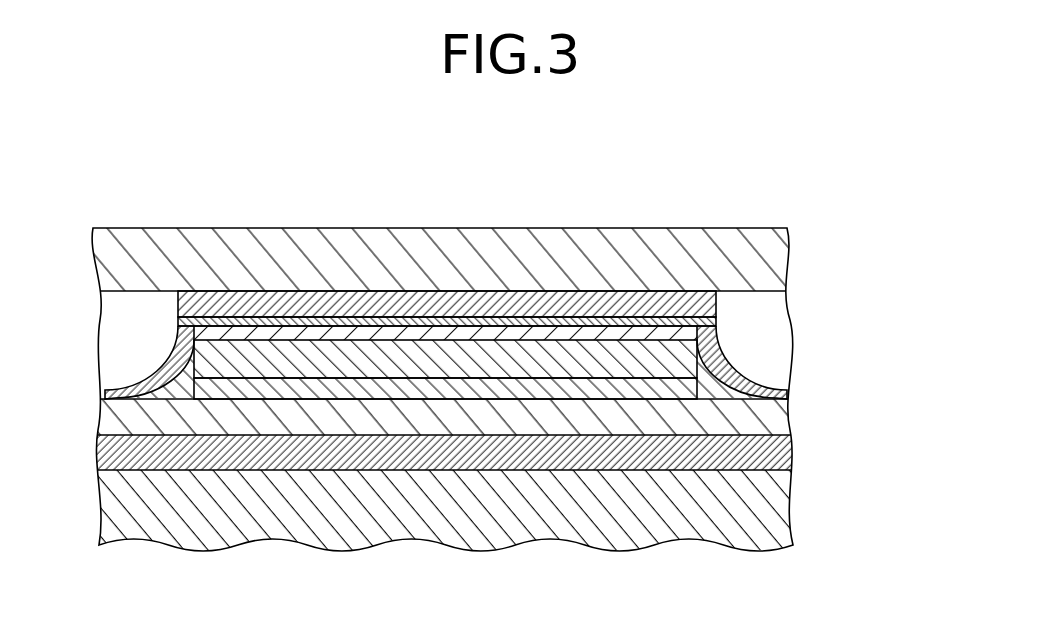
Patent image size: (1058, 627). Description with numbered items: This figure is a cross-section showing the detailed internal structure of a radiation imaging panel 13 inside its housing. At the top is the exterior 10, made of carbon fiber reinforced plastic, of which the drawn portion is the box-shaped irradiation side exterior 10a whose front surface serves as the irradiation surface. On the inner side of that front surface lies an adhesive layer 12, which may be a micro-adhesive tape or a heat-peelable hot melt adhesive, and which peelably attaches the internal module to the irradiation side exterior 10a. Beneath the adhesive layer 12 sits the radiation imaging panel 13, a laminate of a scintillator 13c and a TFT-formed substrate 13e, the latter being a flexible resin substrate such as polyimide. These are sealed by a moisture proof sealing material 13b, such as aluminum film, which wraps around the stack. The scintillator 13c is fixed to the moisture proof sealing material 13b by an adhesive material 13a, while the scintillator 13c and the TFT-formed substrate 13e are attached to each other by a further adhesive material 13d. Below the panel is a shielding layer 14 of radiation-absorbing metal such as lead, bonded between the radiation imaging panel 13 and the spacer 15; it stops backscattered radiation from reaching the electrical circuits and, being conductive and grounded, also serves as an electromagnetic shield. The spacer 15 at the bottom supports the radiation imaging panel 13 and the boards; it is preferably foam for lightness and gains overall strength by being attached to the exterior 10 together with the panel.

The exterior 10 is at (637, 227).
The irradiation side exterior 10a is at (637, 227).
The adhesive layer 12 is at (702, 300).
The radiation imaging panel 13 is at (518, 344).
The adhesive material 13a is at (697, 337).
The moisture proof sealing material 13b is at (727, 348).
The scintillator 13c is at (687, 373).
The adhesive material 13d is at (722, 387).
The TFT-formed substrate 13e is at (491, 417).
The shielding layer 14 is at (772, 453).
The spacer 15 is at (772, 512).